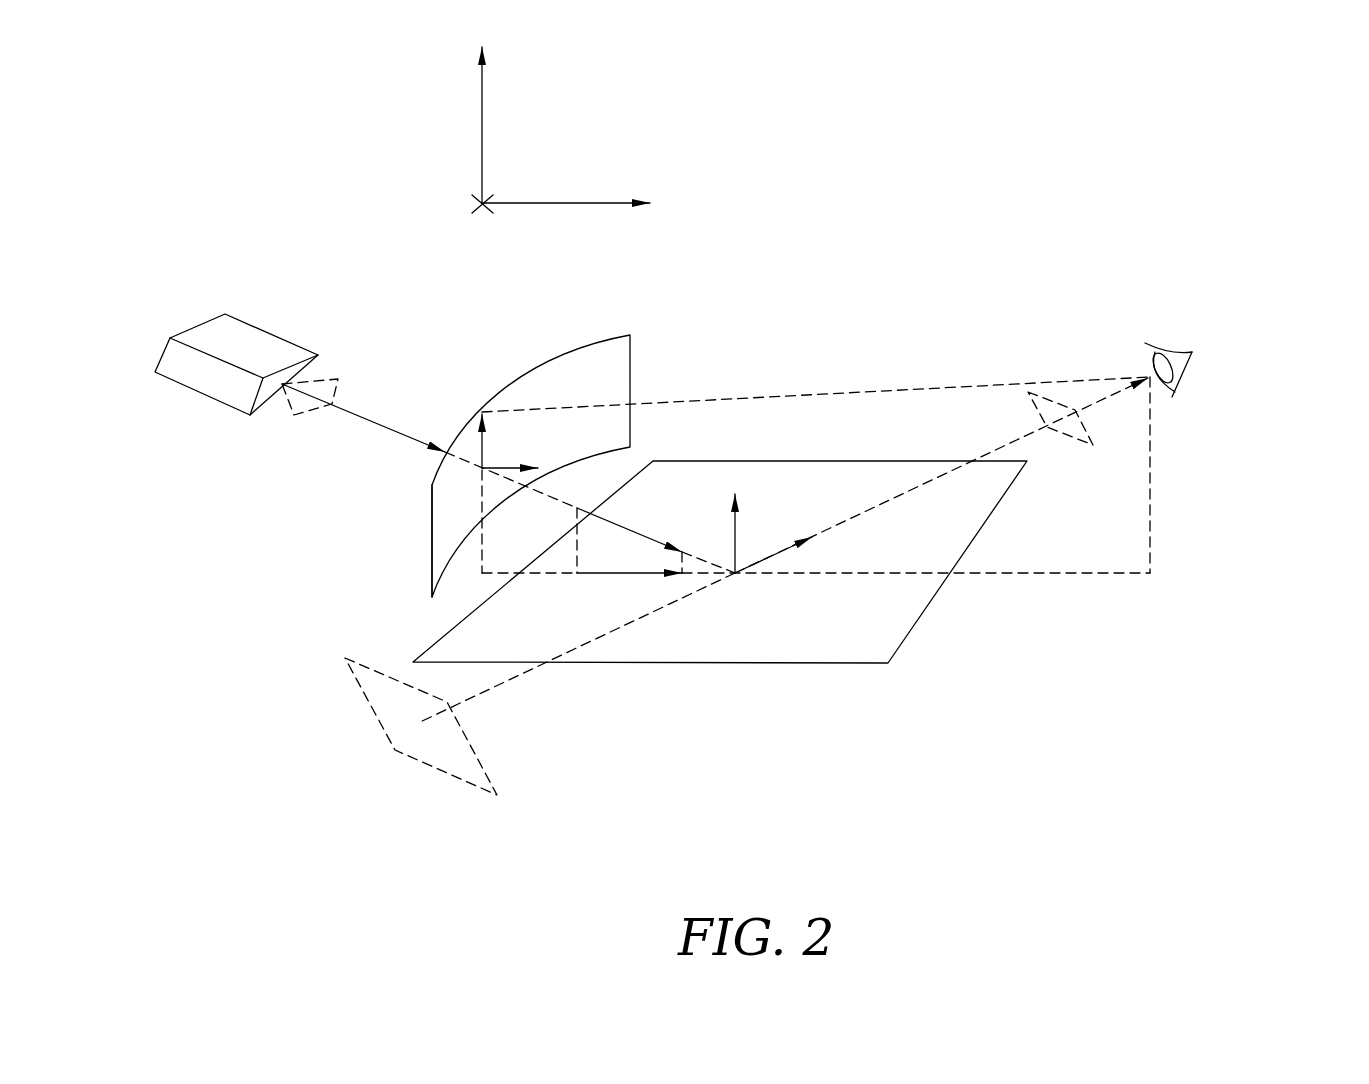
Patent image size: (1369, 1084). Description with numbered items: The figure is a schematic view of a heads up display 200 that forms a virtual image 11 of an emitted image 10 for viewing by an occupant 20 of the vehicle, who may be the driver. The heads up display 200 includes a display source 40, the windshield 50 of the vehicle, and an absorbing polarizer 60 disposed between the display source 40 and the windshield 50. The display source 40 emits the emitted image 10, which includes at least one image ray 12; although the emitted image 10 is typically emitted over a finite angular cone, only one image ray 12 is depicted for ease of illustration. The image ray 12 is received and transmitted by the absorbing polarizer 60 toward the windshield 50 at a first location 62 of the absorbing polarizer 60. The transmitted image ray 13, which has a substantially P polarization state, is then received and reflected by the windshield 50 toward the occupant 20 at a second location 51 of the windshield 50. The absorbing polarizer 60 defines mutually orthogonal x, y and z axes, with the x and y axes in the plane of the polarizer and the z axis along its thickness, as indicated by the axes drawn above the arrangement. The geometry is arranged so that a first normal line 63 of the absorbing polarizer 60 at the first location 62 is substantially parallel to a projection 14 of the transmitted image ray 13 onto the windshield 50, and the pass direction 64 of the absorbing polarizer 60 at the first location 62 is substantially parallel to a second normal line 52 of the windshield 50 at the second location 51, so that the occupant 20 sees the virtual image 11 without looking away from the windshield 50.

The heads up display 200 is at (1192, 183).
The display source 40 is at (162, 355).
The emitted image 10 is at (336, 380).
The image ray 12 is at (370, 423).
The absorbing polarizer 60 is at (588, 345).
The first location 62 is at (465, 470).
The first normal line 63 is at (507, 466).
The pass direction 64 is at (462, 440).
The transmitted image ray 13 is at (630, 527).
The projection 14 is at (610, 573).
The second location 51 is at (735, 575).
The second normal line 52 is at (737, 540).
The windshield 50 is at (913, 630).
The occupant 20 is at (1176, 352).
The virtual image 11 is at (430, 767).